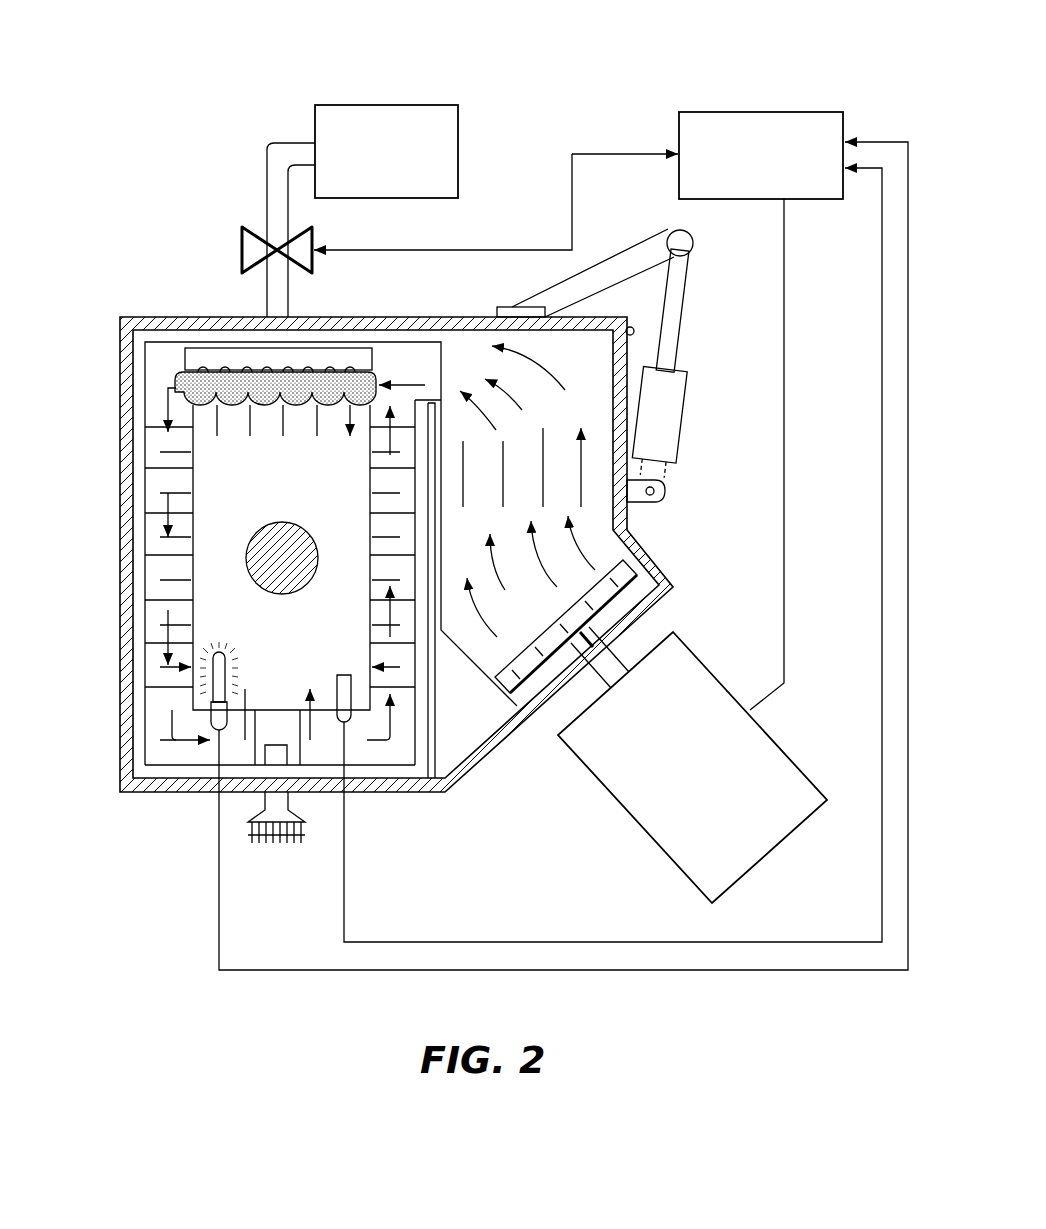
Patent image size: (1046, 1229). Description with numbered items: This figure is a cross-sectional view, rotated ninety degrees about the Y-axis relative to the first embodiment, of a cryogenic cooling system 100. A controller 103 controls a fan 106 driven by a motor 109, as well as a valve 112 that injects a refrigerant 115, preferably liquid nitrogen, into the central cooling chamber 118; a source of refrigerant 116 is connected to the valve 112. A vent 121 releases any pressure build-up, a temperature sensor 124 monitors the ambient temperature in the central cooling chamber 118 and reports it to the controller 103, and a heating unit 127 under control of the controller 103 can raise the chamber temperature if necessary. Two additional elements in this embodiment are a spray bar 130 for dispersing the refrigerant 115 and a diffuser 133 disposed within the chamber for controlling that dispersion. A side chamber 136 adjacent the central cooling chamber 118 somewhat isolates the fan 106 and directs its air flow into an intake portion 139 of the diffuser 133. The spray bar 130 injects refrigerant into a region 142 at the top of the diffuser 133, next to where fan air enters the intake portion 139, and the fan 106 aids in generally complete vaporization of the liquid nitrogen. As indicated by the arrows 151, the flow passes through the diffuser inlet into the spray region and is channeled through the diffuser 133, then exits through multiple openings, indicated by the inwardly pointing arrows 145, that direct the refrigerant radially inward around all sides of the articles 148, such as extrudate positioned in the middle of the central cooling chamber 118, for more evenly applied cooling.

The cooling system 100 is at (568, 76).
The controller 103 is at (785, 112).
The fan 106 is at (610, 560).
The motor 109 is at (668, 836).
The valve 112 is at (242, 250).
The refrigerant 115 is at (182, 384).
The source of refrigerant 116 is at (410, 105).
The central cooling chamber 118 is at (252, 455).
The vent 121 is at (247, 828).
The temperature sensor 124 is at (336, 690).
The heating unit 127 is at (230, 670).
The spray bar 130 is at (197, 350).
The diffuser 133 is at (197, 778).
The side chamber 136 is at (585, 392).
The intake portion 139 is at (446, 357).
The region 142 is at (163, 355).
The arrows 145 is at (355, 495).
The articles 148 is at (269, 593).
The arrows 151 is at (150, 412).